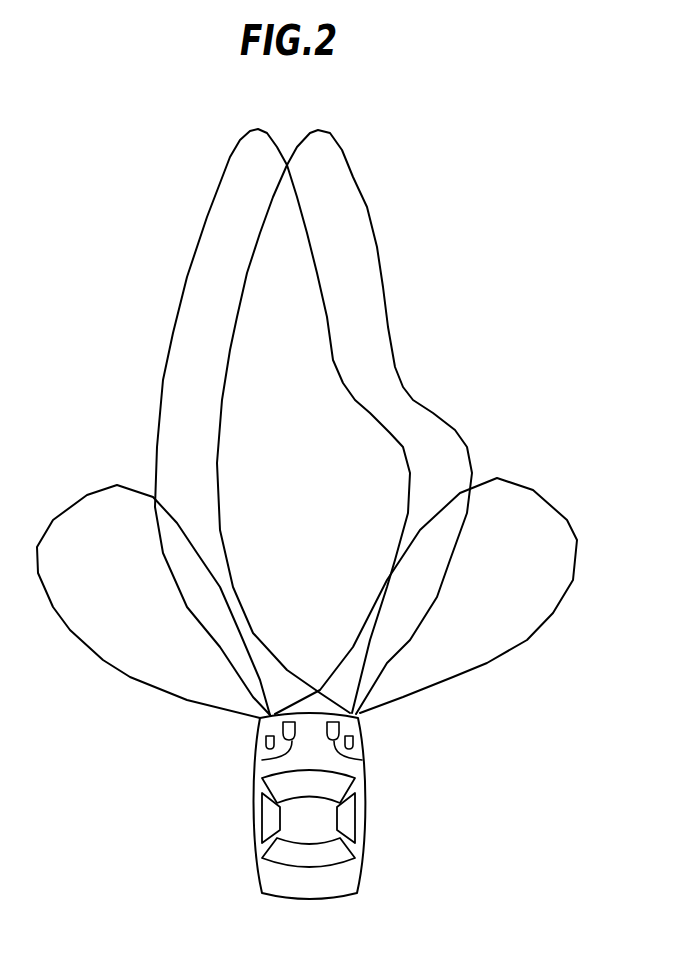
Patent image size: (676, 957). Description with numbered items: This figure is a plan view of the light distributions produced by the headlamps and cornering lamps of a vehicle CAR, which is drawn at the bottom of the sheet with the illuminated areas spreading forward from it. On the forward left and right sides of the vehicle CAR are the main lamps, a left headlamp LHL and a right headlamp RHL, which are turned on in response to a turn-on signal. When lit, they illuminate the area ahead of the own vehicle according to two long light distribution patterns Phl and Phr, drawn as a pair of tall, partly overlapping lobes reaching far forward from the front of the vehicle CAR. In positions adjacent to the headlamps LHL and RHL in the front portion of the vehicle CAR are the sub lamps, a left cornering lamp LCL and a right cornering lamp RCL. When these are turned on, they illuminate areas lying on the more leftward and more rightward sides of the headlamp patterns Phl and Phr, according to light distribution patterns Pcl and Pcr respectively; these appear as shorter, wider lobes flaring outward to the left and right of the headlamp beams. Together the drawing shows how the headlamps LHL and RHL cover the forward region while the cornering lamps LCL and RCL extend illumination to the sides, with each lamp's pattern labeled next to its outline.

The light distribution pattern of left headlamp Phl is at (172, 329).
The light distribution pattern of right headlamp Phr is at (383, 307).
The light distribution pattern of left cornering lamp Pcl is at (93, 487).
The light distribution pattern of right cornering lamp Pcr is at (530, 487).
The vehicle CAR is at (348, 877).
The left headlamp LHL is at (265, 758).
The right headlamp RHL is at (360, 760).
The left cornering lamp LCL is at (266, 745).
The right cornering lamp RCL is at (356, 740).